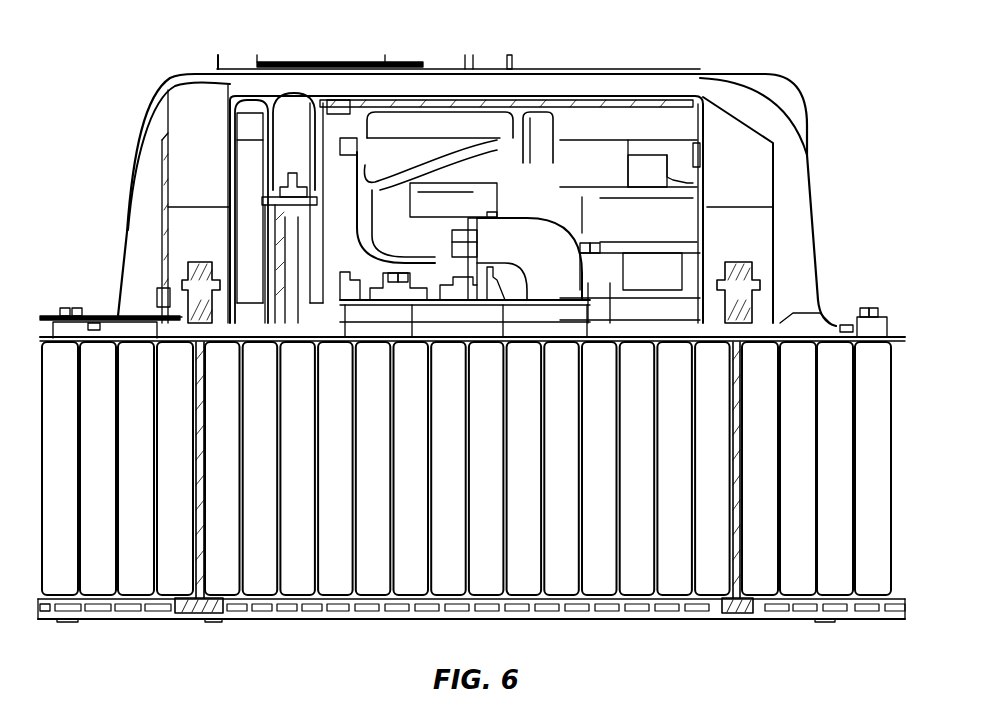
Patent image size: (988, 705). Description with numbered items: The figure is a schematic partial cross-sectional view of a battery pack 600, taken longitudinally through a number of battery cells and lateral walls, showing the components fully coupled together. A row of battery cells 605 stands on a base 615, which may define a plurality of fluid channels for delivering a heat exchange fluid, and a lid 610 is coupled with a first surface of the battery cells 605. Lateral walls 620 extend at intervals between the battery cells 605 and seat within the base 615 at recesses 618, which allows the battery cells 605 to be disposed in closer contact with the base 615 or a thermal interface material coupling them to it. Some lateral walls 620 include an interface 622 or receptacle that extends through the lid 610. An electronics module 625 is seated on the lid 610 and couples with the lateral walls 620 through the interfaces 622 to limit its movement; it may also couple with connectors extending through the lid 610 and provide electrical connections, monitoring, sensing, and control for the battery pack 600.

The battery pack 600 is at (100, 77).
The battery cells 605 is at (147, 590).
The lid 610 is at (47, 316).
The base 615 is at (822, 623).
The recesses 618 is at (197, 617).
The lateral walls 620 is at (722, 602).
The interface 622 is at (760, 310).
The electronics module 625 is at (795, 152).